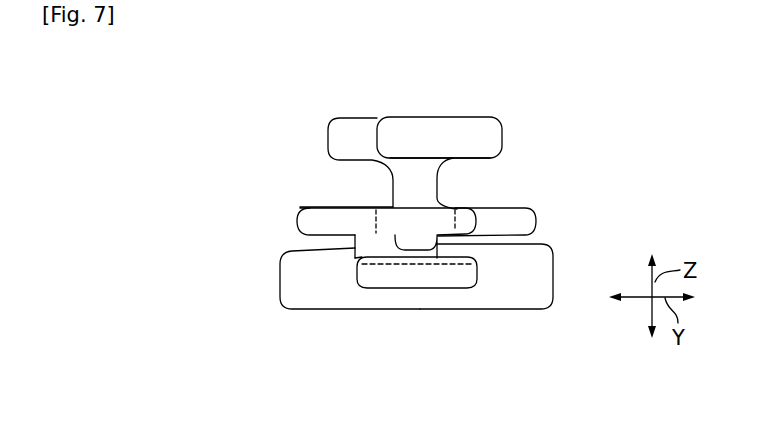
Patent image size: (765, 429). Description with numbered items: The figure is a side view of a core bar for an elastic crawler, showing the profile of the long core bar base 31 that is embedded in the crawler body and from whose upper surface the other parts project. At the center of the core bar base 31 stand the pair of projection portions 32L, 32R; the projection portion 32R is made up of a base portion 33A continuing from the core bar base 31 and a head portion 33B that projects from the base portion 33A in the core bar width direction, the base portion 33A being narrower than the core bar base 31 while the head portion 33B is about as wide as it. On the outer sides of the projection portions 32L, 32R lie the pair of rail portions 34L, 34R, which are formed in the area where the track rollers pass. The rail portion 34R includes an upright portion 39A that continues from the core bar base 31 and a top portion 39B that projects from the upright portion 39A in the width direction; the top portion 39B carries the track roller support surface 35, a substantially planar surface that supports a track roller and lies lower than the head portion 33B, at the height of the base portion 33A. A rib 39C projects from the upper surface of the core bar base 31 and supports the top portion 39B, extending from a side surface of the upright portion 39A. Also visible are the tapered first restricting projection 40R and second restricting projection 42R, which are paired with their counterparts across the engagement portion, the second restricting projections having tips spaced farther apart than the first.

The core bar base 31 is at (426, 281).
The projection portion 32L is at (359, 117).
The projection portion 32R is at (487, 116).
The base portion 33A is at (427, 187).
The head portion 33B is at (487, 136).
The rail portion 34R is at (308, 207).
The rail portion 34L is at (518, 207).
The track roller support surface 35 is at (338, 207).
The upright portion 39A is at (352, 240).
The top portion 39B is at (308, 221).
The rib 39C is at (352, 258).
The first restricting projection 40R is at (533, 296).
The second restricting projection 42R is at (308, 296).